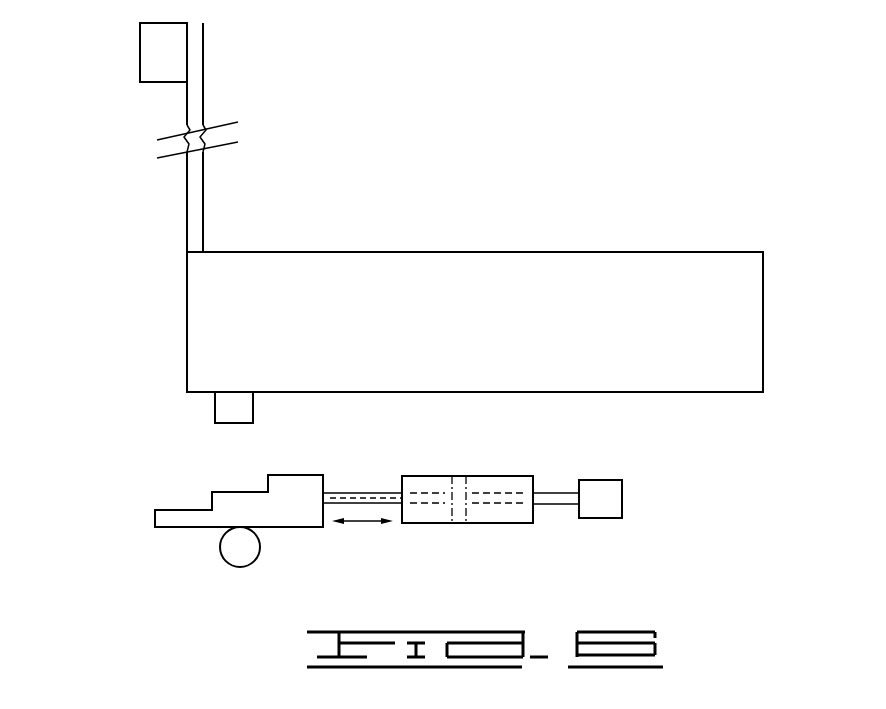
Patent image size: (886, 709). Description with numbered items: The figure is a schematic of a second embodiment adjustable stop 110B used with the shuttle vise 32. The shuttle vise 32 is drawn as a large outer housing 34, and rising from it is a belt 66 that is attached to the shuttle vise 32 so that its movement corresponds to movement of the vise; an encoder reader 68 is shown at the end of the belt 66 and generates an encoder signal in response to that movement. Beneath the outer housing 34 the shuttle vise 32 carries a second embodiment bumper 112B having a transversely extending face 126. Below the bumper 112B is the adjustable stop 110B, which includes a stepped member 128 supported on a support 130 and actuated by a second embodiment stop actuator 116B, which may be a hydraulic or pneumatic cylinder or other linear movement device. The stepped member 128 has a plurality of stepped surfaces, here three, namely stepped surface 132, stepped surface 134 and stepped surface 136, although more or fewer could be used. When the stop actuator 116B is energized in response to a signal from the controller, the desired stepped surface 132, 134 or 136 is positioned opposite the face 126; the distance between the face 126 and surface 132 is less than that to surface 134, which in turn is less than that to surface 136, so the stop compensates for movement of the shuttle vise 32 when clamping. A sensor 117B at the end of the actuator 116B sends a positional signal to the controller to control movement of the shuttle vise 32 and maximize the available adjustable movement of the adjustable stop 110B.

The shuttle vise 32 is at (451, 207).
The outer housing 34 is at (737, 287).
The belt 66 is at (203, 190).
The encoder reader 68 is at (152, 52).
The second embodiment adjustable stop 110B is at (448, 497).
The second embodiment bumper 112B is at (222, 410).
The second embodiment stop actuator 116B is at (495, 476).
The sensor 117B is at (600, 516).
The transversely extending face 126 is at (240, 424).
The stepped member 128 is at (287, 526).
The support 130 is at (228, 552).
The stepped surface 132 is at (297, 474).
The stepped surface 134 is at (247, 490).
The stepped surface 136 is at (178, 509).